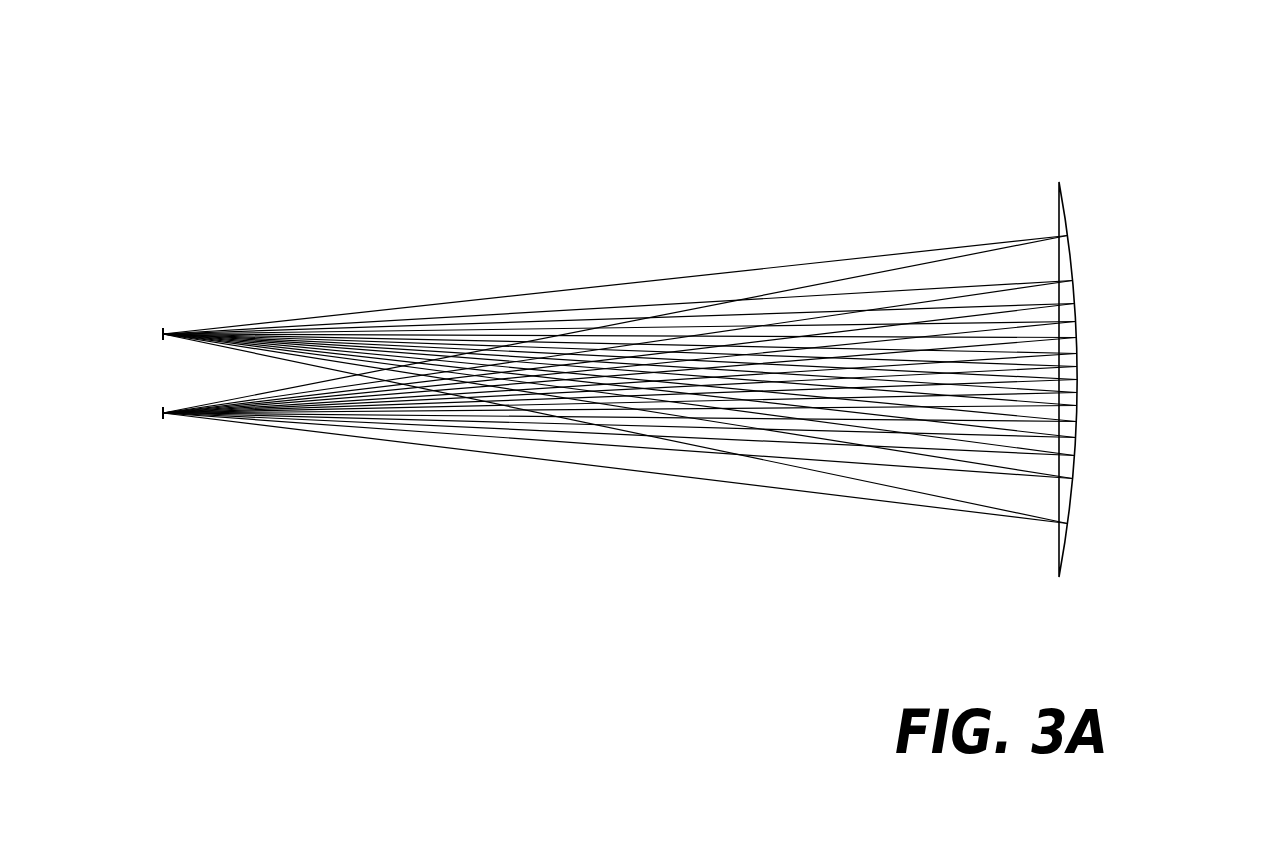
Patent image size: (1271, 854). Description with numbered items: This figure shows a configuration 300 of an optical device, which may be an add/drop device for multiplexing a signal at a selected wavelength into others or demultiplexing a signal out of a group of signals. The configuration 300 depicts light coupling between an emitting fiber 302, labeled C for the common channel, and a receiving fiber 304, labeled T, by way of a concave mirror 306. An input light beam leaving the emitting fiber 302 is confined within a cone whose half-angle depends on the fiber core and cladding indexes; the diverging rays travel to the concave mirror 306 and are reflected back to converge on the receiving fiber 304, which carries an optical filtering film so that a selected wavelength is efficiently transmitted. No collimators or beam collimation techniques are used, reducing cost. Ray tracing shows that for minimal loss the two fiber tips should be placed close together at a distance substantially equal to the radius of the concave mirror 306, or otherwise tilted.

The configuration 300 is at (620, 268).
The emitting fiber 302 is at (132, 312).
The receiving fiber 304 is at (130, 437).
The concave mirror 306 is at (1045, 331).